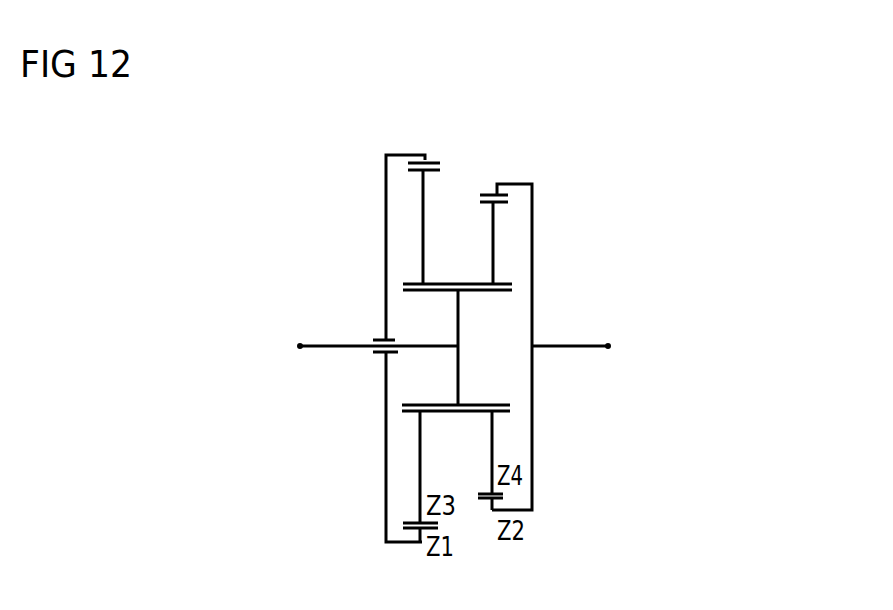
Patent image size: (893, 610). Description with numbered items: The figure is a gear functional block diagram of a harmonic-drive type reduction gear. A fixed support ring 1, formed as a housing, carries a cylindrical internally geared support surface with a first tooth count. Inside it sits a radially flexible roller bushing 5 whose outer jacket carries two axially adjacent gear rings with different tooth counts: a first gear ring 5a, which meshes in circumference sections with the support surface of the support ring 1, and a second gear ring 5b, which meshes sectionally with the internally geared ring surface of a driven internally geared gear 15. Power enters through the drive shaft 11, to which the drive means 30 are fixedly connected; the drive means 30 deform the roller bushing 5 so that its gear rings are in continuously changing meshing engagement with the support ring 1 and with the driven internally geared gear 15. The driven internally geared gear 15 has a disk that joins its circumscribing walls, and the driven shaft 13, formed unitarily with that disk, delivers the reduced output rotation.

The support ring 1 is at (386, 173).
The roller bushing 5 is at (493, 245).
The first gear ring 5a is at (435, 163).
The second gear ring 5b is at (500, 498).
The drive shaft 11 is at (333, 347).
The driven shaft 13 is at (595, 348).
The driven internally geared gear 15 is at (535, 207).
The drive means 30 is at (458, 314).